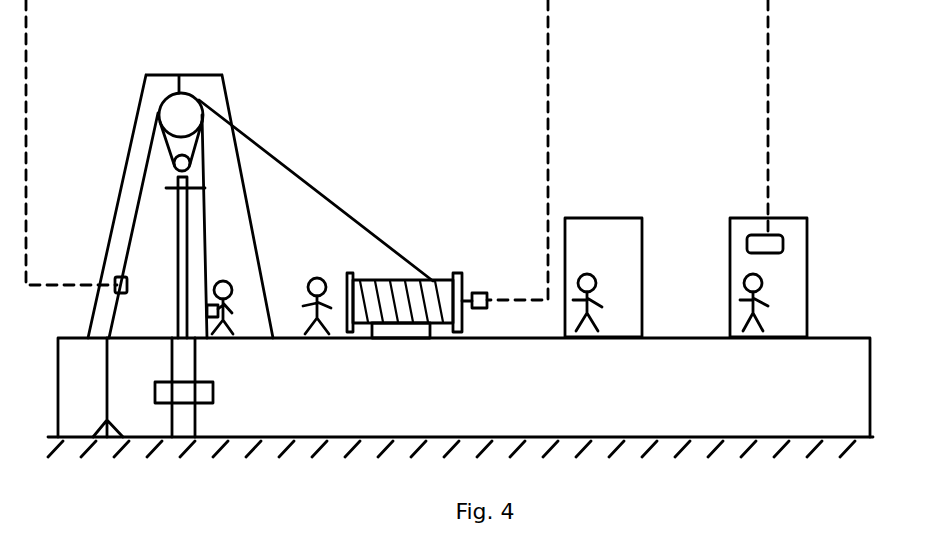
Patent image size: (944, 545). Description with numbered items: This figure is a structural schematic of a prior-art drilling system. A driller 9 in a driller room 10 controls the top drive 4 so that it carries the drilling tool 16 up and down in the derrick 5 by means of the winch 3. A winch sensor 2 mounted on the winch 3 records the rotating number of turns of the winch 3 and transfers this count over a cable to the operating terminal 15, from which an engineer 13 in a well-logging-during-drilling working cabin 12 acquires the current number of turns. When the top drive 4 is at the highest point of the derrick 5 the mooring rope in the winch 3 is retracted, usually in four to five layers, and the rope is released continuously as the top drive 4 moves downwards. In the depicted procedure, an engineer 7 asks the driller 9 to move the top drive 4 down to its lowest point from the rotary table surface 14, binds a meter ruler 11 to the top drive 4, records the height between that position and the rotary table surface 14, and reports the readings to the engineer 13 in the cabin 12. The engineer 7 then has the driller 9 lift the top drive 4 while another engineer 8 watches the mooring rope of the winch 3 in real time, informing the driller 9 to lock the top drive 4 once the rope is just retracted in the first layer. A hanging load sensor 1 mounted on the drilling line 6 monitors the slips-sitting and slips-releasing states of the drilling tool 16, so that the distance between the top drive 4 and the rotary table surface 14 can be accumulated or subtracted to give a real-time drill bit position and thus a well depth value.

The hanging load sensor 1 is at (115, 287).
The winch sensor 2 is at (483, 293).
The winch 3 is at (445, 280).
The top drive 4 is at (197, 185).
The derrick 5 is at (197, 73).
The drilling line 6 is at (133, 228).
The engineer 7 is at (228, 313).
The engineer 8 is at (330, 304).
The driller 9 is at (599, 297).
The driller room 10 is at (578, 218).
The meter ruler 11 is at (203, 233).
The well-logging-during-drilling working cabin 12 is at (743, 218).
The engineer 13 is at (764, 297).
The rotary table surface 14 is at (225, 338).
The operating terminal 15 is at (783, 240).
The drilling tool 16 is at (177, 208).